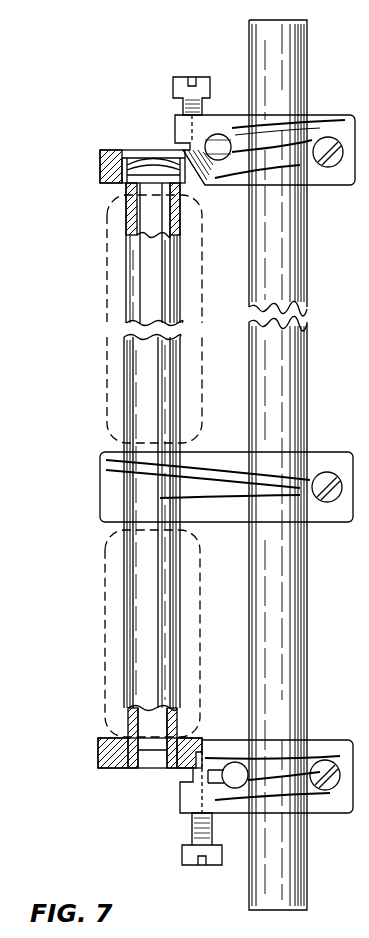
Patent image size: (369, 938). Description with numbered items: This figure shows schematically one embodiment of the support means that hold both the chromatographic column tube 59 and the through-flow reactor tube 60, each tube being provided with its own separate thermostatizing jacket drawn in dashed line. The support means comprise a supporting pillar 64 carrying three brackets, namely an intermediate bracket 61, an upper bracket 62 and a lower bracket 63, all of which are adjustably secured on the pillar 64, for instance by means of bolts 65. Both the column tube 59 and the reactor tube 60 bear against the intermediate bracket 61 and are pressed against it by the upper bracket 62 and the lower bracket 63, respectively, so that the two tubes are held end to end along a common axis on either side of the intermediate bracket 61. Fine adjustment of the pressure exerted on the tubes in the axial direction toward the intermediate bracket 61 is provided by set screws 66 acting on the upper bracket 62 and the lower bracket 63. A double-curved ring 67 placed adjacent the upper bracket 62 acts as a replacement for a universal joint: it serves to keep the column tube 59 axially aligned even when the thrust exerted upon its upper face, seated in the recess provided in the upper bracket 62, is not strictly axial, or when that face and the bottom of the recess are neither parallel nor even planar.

The column tube 59 is at (128, 282).
The reactor tube 60 is at (142, 615).
The intermediate bracket 61 is at (112, 493).
The upper bracket 62 is at (245, 127).
The lower bracket 63 is at (300, 792).
The supporting pillar 64 is at (288, 358).
The bolts 65 is at (325, 143).
The set screws 66 is at (200, 77).
The double-curved ring 67 is at (163, 157).